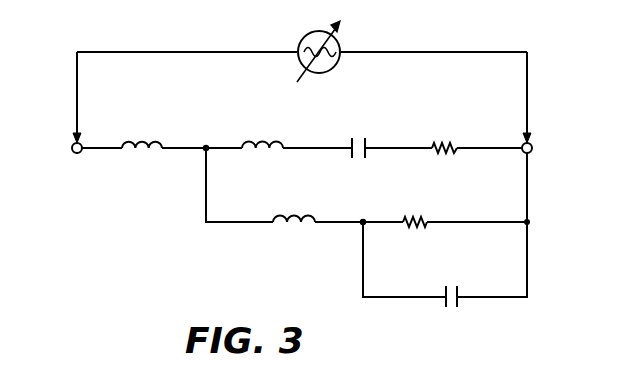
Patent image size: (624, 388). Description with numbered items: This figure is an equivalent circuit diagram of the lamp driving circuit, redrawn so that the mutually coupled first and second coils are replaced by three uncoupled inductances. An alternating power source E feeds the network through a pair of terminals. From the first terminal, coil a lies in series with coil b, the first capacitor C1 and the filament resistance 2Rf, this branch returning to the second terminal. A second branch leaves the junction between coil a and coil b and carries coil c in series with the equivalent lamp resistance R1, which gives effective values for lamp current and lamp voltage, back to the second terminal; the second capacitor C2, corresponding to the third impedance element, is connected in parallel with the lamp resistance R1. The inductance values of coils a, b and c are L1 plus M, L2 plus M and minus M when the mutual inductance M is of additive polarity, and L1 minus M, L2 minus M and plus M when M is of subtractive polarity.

The power source E is at (318, 45).
The coil a is at (142, 132).
The coil b is at (262, 132).
The coil c is at (294, 207).
The first capacitor C1 is at (358, 137).
The filament resistance 2Rf is at (443, 135).
The equivalent lamp resistance R1 is at (415, 211).
The second capacitor C2 is at (453, 285).